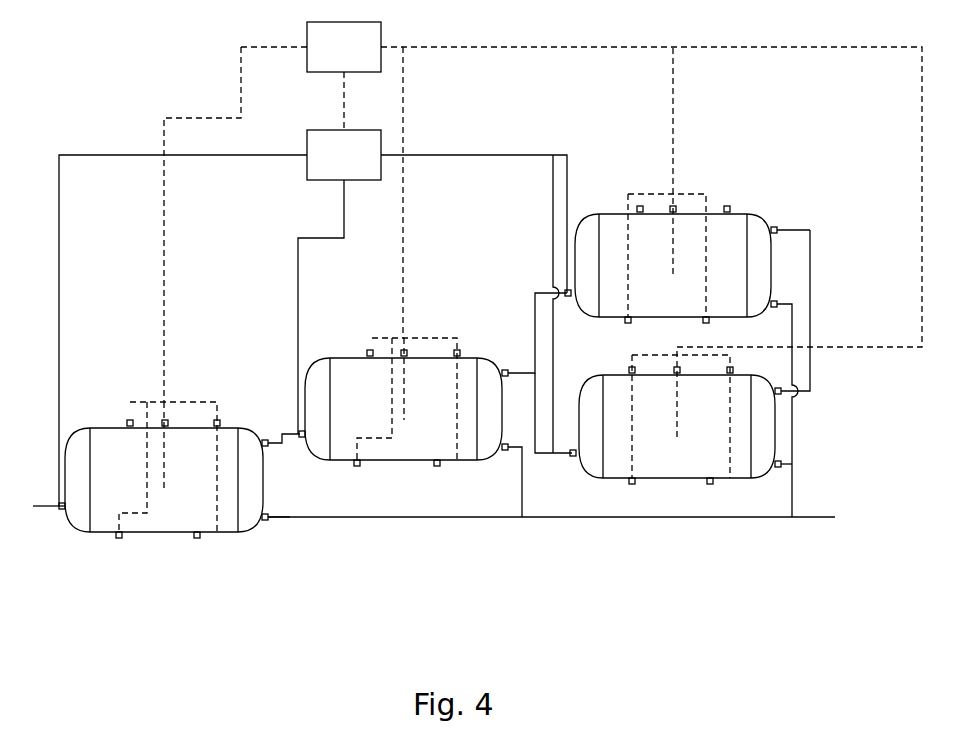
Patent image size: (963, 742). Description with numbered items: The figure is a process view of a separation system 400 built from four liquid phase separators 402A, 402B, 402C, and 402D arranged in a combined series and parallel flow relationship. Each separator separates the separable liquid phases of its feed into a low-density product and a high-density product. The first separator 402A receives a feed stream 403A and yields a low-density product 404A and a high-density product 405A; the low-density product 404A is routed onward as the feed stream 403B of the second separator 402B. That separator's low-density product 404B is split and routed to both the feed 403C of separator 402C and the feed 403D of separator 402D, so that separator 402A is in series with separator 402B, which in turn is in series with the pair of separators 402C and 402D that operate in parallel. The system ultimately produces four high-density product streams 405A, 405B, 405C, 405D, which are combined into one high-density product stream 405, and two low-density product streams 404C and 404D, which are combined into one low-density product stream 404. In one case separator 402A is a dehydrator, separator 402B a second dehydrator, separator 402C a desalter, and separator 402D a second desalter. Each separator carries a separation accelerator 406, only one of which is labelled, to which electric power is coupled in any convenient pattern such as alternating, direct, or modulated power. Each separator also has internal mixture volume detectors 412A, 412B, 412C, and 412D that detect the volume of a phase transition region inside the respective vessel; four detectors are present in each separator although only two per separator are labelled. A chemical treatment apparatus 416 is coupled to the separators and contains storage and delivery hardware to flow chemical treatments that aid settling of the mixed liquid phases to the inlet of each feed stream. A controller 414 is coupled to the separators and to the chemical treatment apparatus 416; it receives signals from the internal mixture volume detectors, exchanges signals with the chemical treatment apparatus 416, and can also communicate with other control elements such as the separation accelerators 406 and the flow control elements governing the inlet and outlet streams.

The separation system 400 is at (210, 51).
The controller 414 is at (344, 47).
The chemical treatment apparatus 416 is at (344, 155).
The separator 402A is at (93, 532).
The separator 402B is at (330, 355).
The separator 402C is at (610, 212).
The separator 402D is at (586, 463).
The feed stream 403A is at (47, 515).
The feed stream 403B is at (285, 430).
The feed 403C is at (535, 293).
The feed 403D is at (551, 455).
The low-density product 404A is at (265, 440).
The low-density product 404B is at (507, 372).
The low-density product stream 404C is at (787, 230).
The low-density product stream 404D is at (781, 393).
The low-density product stream 404 is at (810, 310).
The high-density product 405A is at (283, 520).
The high-density product stream 405B is at (522, 492).
The high-density product stream 405C is at (810, 232).
The high-density product stream 405D is at (787, 465).
The high-density product stream 405 is at (823, 523).
The separation accelerator 406 is at (165, 420).
The internal mixture volume detector 412A is at (118, 538).
The internal mixture volume detector 412B is at (457, 350).
The internal mixture volume detector 412C is at (727, 205).
The internal mixture volume detector 412D is at (632, 485).